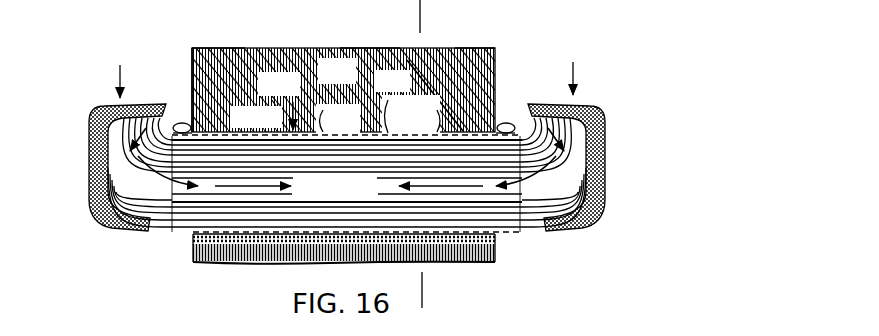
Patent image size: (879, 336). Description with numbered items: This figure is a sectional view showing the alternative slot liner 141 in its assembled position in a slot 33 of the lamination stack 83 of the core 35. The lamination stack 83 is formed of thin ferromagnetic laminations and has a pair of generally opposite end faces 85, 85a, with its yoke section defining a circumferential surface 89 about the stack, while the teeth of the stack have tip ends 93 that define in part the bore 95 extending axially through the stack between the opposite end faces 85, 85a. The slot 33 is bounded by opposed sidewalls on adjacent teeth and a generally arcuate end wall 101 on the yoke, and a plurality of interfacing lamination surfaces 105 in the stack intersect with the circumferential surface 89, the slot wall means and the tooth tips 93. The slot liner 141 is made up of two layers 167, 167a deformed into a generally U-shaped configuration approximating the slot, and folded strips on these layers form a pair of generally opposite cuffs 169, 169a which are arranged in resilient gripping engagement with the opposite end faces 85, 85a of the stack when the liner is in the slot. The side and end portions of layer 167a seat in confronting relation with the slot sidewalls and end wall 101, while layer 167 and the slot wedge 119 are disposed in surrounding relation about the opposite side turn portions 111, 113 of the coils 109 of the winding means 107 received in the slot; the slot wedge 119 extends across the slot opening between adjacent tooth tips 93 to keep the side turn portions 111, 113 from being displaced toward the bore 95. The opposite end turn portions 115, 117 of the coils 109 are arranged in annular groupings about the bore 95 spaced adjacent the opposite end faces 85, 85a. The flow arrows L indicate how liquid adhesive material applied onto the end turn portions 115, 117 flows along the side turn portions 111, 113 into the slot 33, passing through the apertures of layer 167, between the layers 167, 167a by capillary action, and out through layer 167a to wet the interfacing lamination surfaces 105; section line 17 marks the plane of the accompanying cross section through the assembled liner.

The core 35 is at (483, 36).
The end face 85 is at (495, 62).
The end face 85a is at (193, 62).
The interfacing lamination surfaces 105 is at (218, 47).
The circumferential surface 89 is at (370, 47).
The slot liner 141 is at (293, 93).
The lamination stack 83 is at (350, 81).
The slot 33 is at (418, 95).
The layer 167a is at (249, 137).
The end wall 101 is at (338, 119).
The layer 167 is at (411, 114).
The cuff 169a is at (180, 122).
The cuff 169 is at (509, 126).
The end turn portion 115 is at (92, 142).
The winding means 107 is at (667, 140).
The end turn portion 117 is at (604, 163).
The coil 109 is at (595, 196).
The side turn portion 111 is at (330, 200).
The side turn portion 113 is at (370, 200).
The tooth tip 93 is at (193, 246).
The bore 95 is at (455, 266).
The slot wedge 119 is at (505, 235).
The section line 17- 17 is at (420, 8).
The liquid adhesive material flow arrows L is at (120, 80).